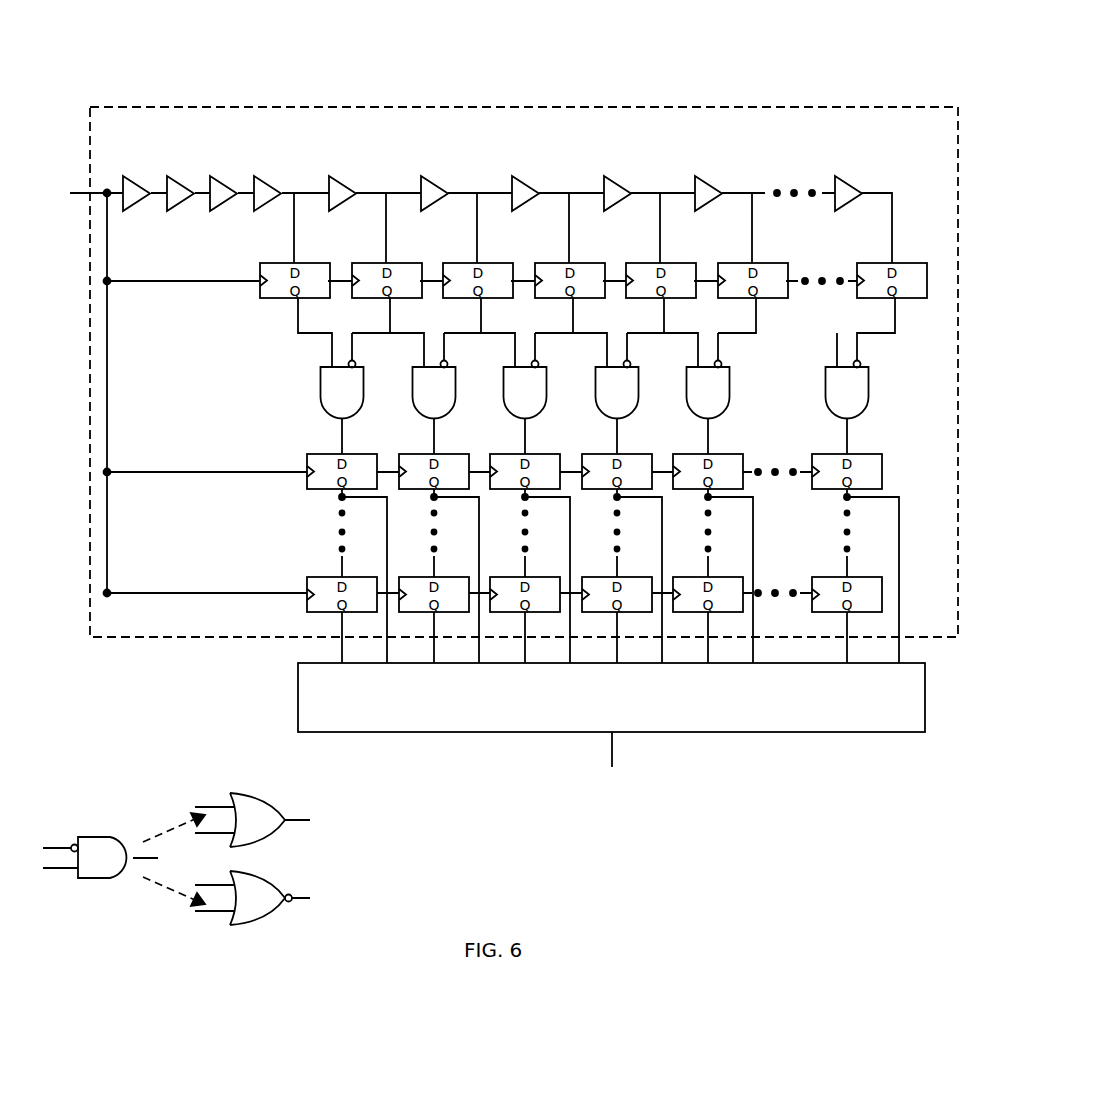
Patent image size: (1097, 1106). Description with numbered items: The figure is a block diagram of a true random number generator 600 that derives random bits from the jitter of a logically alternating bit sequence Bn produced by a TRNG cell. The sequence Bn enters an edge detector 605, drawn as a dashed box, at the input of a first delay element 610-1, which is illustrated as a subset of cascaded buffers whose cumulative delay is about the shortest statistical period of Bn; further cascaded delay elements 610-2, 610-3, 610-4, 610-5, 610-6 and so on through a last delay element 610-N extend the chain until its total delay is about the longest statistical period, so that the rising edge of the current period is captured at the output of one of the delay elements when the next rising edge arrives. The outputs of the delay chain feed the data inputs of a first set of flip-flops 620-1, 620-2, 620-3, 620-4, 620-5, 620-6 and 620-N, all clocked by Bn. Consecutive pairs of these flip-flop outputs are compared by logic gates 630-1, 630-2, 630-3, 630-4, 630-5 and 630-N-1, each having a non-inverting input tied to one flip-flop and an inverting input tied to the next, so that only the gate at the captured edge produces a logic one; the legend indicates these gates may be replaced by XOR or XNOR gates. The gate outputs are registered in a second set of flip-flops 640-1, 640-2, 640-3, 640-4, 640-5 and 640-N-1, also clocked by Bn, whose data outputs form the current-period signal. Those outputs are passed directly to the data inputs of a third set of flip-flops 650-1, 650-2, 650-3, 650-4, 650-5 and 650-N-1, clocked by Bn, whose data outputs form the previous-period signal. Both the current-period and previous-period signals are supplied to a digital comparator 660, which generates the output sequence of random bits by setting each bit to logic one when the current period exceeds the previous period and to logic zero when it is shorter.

The true random number generator 600 is at (653, 55).
The edge detector 605 is at (482, 107).
The first delay element 610-1 is at (282, 163).
The delay element 610-2 is at (337, 181).
The delay element 610-3 is at (429, 181).
The delay element 610-4 is at (520, 181).
The delay element 610-5 is at (612, 181).
The delay element 610-6 is at (703, 181).
The last delay element 610-N is at (843, 181).
The flip-flop 620-1 is at (294, 263).
The flip-flop 620-2 is at (386, 263).
The flip-flop 620-3 is at (477, 263).
The flip-flop 620-4 is at (569, 263).
The flip-flop 620-5 is at (660, 263).
The flip-flop 620-6 is at (752, 263).
The last flip-flop 620-N is at (892, 263).
The AND gate 630-1 is at (321, 390).
The AND gate 630-2 is at (413, 390).
The AND gate 630-3 is at (504, 390).
The AND gate 630-4 is at (596, 390).
The AND gate 630-5 is at (687, 390).
The last AND gate 630-N-1 is at (825, 390).
The second-set flip-flop 640-1 is at (338, 454).
The second-set flip-flop 640-2 is at (430, 454).
The second-set flip-flop 640-3 is at (521, 454).
The second-set flip-flop 640-4 is at (613, 454).
The second-set flip-flop 640-5 is at (704, 454).
The last second-set flip-flop 640-N-1 is at (843, 454).
The third-set flip-flop 650-1 is at (338, 577).
The third-set flip-flop 650-2 is at (434, 620).
The third-set flip-flop 650-3 is at (525, 620).
The third-set flip-flop 650-4 is at (617, 620).
The third-set flip-flop 650-5 is at (708, 620).
The last third-set flip-flop 650-N-1 is at (812, 593).
The digital comparator 660 is at (611, 730).